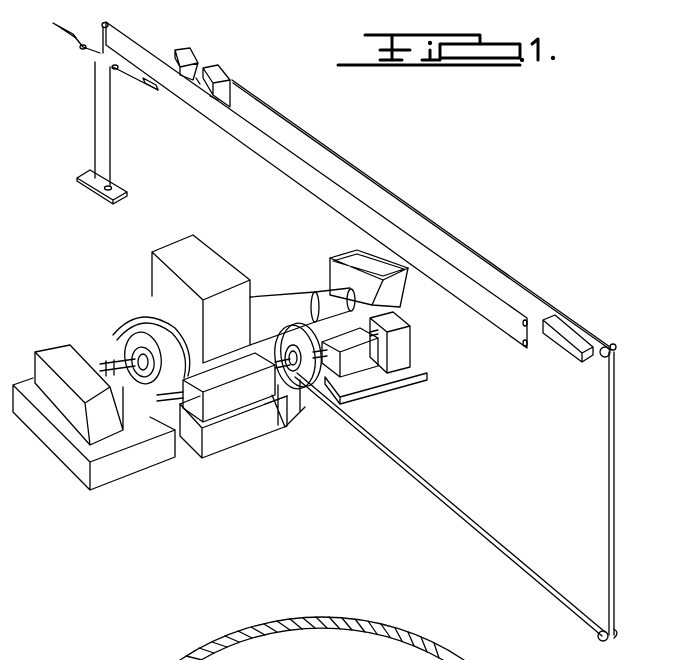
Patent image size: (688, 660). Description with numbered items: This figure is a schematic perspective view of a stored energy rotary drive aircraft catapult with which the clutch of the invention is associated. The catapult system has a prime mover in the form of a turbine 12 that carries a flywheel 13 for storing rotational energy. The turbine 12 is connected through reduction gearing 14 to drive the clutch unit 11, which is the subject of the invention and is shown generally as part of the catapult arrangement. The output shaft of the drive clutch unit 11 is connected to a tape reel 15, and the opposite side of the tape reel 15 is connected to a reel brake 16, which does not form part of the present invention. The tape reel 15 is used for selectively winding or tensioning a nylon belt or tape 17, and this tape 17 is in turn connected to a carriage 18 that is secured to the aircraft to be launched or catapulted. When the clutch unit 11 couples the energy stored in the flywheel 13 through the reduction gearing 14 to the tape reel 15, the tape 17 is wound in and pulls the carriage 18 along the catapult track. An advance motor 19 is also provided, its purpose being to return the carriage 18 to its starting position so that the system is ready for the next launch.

The clutch unit 11 is at (250, 448).
The turbine 12 is at (268, 307).
The flywheel 13 is at (157, 325).
The reduction gearing 14 is at (58, 352).
The tape reel 15 is at (300, 390).
The reel brake 16 is at (360, 383).
The nylon belt or tape 17 is at (463, 510).
The carriage 18 is at (222, 73).
The advance motor 19 is at (400, 342).